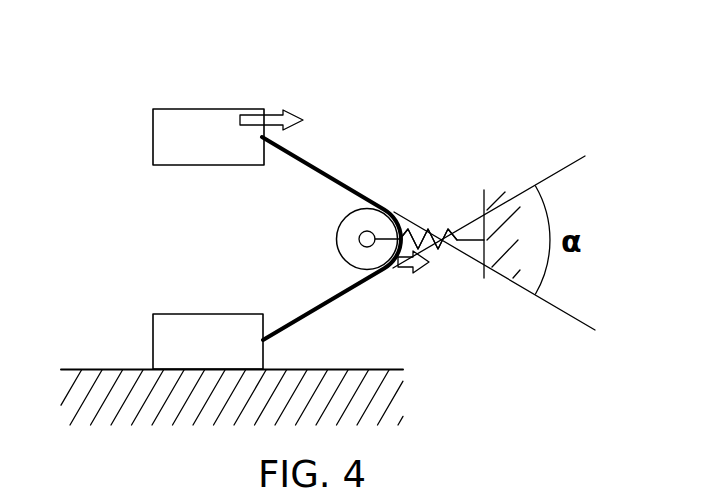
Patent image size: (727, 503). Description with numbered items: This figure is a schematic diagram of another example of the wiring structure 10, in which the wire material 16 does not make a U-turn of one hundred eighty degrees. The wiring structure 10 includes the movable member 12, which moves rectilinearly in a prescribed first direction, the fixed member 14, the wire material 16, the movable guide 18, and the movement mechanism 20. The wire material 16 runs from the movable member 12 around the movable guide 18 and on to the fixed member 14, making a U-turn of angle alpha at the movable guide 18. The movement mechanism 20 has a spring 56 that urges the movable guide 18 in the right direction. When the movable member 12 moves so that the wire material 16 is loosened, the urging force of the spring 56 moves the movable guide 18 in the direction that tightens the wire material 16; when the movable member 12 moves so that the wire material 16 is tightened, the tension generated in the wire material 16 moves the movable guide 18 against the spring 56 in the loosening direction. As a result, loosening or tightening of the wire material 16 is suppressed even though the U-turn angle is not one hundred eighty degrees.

The wiring structure 10 is at (369, 96).
The movable member 12 is at (210, 109).
The fixed member 14 is at (166, 314).
The wire material 16 is at (338, 180).
The movable guide 18 is at (359, 239).
The movement mechanism 20 is at (428, 239).
The spring 56 is at (427, 232).